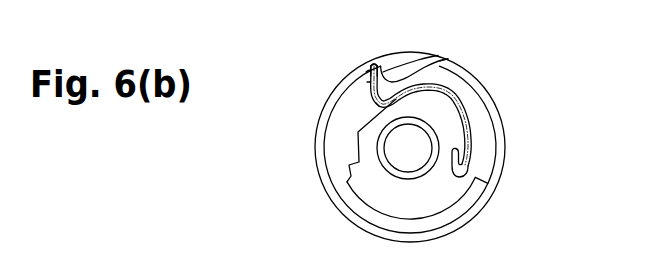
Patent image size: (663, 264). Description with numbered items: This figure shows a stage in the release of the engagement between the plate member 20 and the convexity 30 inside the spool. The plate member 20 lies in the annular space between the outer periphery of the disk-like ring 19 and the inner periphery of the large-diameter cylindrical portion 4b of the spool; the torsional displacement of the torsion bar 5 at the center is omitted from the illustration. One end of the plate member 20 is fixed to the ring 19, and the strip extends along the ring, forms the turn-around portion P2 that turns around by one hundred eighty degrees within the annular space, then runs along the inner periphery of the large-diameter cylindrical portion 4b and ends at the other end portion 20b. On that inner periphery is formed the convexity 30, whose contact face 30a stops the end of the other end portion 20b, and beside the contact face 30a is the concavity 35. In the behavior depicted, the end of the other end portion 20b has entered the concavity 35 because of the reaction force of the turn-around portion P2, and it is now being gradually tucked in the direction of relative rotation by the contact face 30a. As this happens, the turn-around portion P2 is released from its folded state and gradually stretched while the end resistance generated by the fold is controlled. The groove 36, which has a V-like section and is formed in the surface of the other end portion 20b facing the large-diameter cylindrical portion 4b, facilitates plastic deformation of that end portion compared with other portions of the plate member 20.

The large-diameter cylindrical portion 4b is at (315, 142).
The torsion bar 5 is at (406, 158).
The ring 19 is at (358, 197).
The plate member 20 is at (481, 130).
The other end portion 20b is at (370, 66).
The convexity 30 is at (388, 66).
The contact face 30a is at (447, 59).
The concavity 35 is at (367, 73).
The groove 36 is at (369, 82).
The turn-around portion P2 is at (376, 103).